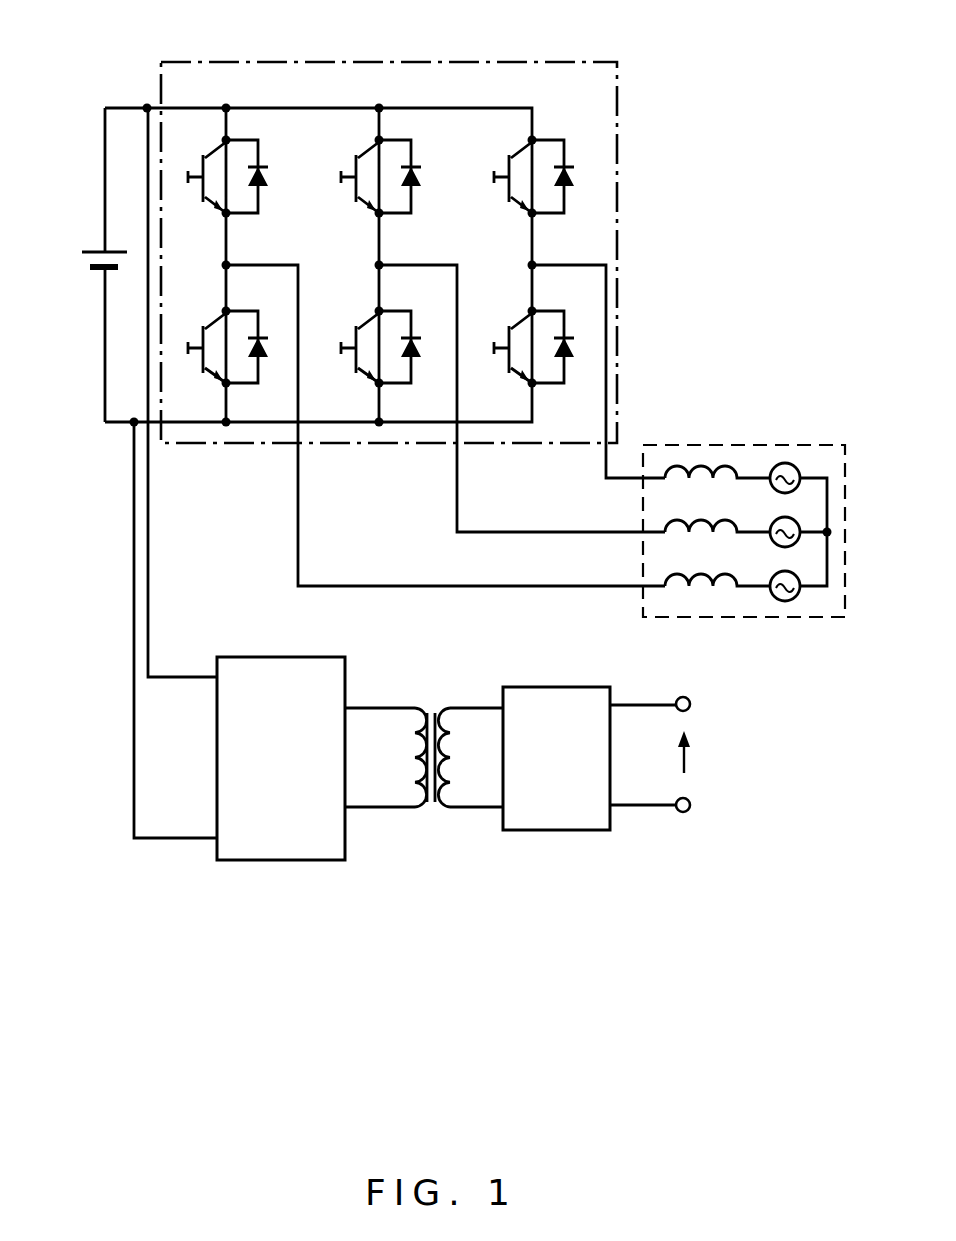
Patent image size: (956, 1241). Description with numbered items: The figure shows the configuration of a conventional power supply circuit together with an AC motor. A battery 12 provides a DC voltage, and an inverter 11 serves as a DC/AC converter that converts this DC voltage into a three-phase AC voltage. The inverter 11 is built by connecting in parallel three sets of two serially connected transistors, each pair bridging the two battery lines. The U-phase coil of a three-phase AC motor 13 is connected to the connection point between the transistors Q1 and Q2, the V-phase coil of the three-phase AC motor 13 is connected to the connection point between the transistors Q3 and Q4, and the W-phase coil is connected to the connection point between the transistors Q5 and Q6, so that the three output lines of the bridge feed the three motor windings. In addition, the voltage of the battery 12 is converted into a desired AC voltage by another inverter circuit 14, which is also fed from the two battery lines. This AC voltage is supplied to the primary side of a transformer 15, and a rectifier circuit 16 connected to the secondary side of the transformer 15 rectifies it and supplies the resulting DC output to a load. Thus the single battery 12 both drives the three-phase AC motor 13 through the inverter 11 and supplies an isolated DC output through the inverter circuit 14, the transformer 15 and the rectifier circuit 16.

The inverter 11 is at (548, 60).
The battery 12 is at (96, 250).
The 3-phase AC motor 13 is at (786, 445).
The inverter circuit 14 is at (276, 657).
The transformer 15 is at (434, 702).
The rectifier circuit 16 is at (566, 687).
The transistor Q1 is at (220, 169).
The transistor Q2 is at (220, 340).
The transistor Q3 is at (370, 169).
The transistor Q4 is at (369, 340).
The transistor Q5 is at (522, 169).
The transistor Q6 is at (525, 340).